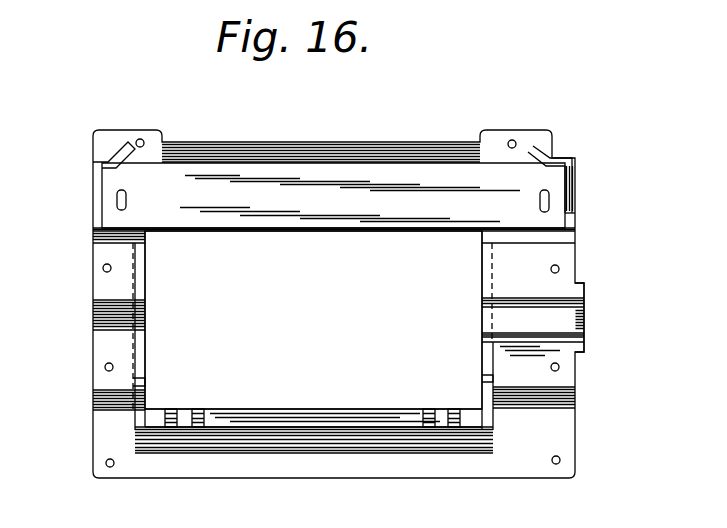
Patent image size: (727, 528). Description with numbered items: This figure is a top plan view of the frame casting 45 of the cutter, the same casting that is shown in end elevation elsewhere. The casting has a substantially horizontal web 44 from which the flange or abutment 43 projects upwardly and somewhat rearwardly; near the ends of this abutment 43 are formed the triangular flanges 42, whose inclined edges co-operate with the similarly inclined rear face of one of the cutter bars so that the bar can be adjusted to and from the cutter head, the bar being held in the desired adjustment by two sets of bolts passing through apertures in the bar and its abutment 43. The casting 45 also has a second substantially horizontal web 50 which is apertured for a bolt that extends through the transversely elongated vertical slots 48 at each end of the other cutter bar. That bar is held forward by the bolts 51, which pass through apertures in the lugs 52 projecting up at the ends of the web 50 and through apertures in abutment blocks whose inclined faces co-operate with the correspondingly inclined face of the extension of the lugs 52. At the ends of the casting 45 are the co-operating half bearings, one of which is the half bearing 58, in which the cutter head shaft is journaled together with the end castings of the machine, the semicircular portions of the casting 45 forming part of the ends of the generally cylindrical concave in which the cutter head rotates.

The triangular flanges 42 is at (198, 410).
The flange or abutment 43 is at (338, 430).
The horizontal web 44 is at (333, 468).
The frame casting 45 is at (313, 320).
The transversely elongated vertical slots 48 is at (116, 201).
The horizontal web 50 is at (575, 216).
The bolts 51 is at (570, 322).
The lugs 52 is at (100, 167).
The half bearing 58 is at (100, 318).